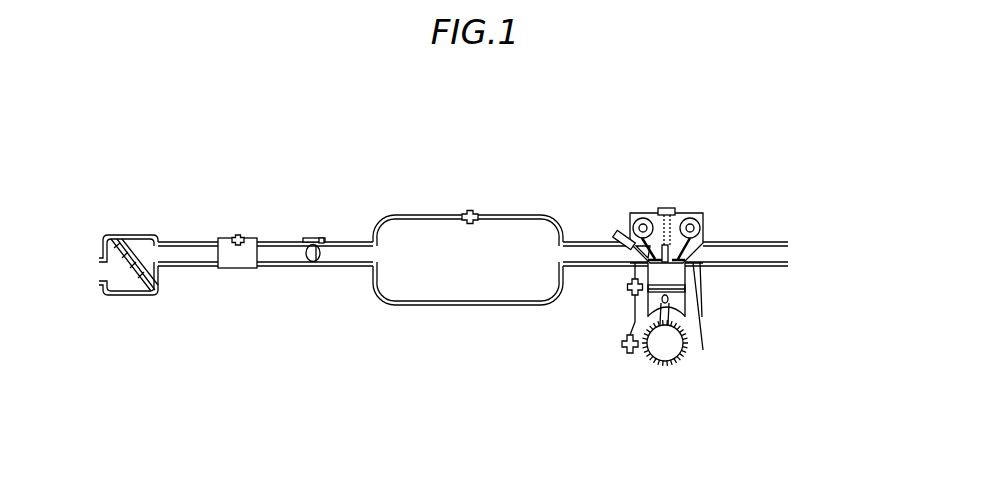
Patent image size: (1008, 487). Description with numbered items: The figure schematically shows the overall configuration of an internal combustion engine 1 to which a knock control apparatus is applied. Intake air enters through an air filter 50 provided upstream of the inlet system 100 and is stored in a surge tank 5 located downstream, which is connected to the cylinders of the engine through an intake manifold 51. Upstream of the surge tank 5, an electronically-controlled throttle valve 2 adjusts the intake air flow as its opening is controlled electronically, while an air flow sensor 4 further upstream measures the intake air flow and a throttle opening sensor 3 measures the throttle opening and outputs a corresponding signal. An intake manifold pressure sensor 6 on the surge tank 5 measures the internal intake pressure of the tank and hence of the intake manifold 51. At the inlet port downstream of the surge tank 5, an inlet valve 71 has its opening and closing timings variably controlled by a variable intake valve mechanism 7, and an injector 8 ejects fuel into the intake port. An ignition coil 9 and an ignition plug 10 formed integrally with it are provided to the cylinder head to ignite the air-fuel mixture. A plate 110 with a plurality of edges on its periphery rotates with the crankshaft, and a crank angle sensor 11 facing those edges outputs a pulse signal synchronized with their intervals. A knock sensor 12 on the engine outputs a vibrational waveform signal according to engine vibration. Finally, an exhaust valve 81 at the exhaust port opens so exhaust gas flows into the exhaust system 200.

The internal combustion engine 1 is at (703, 318).
The electronically-controlled throttle valve 2 is at (316, 262).
The throttle opening sensor 3 is at (311, 238).
The air flow sensor 4 is at (238, 236).
The surge tank 5 is at (465, 292).
The intake manifold pressure sensor 6 is at (476, 211).
The variable intake valve mechanism 7 is at (636, 214).
The injector 8 is at (617, 234).
The ignition coil 9 is at (666, 207).
The ignition plug 10 is at (700, 227).
The crank angle sensor 11 is at (622, 345).
The knock sensor 12 is at (648, 288).
The air filter 50 is at (123, 272).
The intake manifold 51 is at (594, 243).
The inlet valve 71 is at (627, 286).
The exhaust valve 81 is at (698, 270).
The inlet system 100 is at (240, 292).
The plate 110 is at (670, 352).
The exhaust system 200 is at (786, 239).